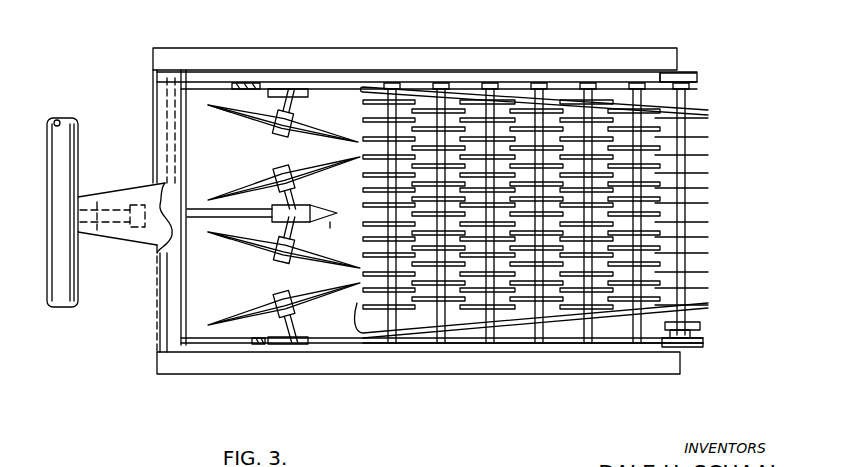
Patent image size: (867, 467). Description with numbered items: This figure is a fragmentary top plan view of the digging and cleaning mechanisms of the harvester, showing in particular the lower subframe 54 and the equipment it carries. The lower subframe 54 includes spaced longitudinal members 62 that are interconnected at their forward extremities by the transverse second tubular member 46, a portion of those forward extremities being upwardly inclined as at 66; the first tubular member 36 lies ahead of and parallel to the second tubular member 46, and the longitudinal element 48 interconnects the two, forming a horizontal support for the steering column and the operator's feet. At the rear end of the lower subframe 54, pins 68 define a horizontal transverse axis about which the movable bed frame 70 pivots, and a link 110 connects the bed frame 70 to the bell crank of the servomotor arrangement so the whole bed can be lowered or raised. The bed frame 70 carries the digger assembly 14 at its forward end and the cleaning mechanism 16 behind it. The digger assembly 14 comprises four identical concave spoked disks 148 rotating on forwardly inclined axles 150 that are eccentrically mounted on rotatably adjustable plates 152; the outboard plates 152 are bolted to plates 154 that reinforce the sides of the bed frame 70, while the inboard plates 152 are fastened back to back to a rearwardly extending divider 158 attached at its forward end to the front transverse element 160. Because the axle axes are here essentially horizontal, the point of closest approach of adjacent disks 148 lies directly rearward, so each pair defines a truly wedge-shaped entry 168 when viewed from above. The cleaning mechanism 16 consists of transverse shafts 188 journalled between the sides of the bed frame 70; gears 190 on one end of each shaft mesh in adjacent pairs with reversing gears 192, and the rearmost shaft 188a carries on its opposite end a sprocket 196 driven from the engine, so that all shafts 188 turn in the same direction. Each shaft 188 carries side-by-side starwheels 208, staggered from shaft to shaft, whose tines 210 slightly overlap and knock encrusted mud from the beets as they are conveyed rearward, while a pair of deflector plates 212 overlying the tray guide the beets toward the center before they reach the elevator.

The digger assembly 14 is at (244, 155).
The cleaning mechanism 16 is at (722, 141).
The first tubular member 36 is at (78, 300).
The second tubular member 46 is at (165, 137).
The longitudinal element 48 is at (140, 247).
The lower subframe 54 is at (448, 390).
The longitudinal members 62 is at (381, 52).
The upwardly inclined portion 66 is at (207, 58).
The pins 68 is at (670, 72).
The movable bed frame 70 is at (477, 343).
The link 110 is at (258, 88).
The concave spoked disks 148 is at (302, 180).
The axles 150 is at (293, 127).
The adjustable plates 152 is at (302, 97).
The reinforcing plates 154 is at (199, 106).
The divider 158 is at (196, 222).
The front transverse element 160 is at (175, 323).
The wedge-shaped entry 168 is at (284, 198).
The transverse shafts 188 is at (640, 327).
The rearmost shaft 188a is at (683, 243).
The gears 190 is at (493, 83).
The reversing gear 192 is at (465, 85).
The sprocket 196 is at (700, 328).
The starwheels 208 is at (655, 145).
The tines 210 is at (340, 237).
The deflector plates 212 is at (450, 96).